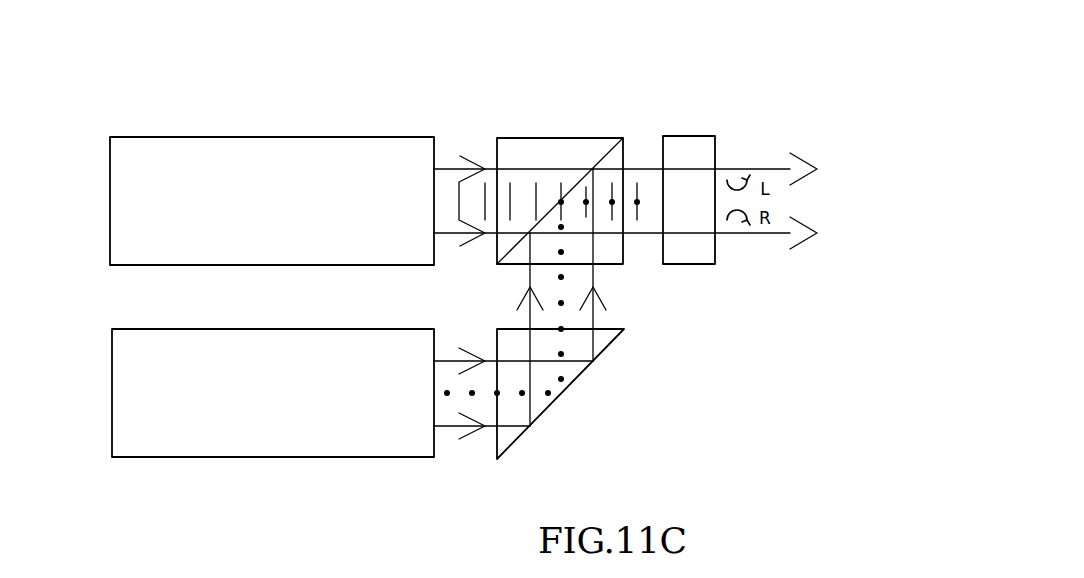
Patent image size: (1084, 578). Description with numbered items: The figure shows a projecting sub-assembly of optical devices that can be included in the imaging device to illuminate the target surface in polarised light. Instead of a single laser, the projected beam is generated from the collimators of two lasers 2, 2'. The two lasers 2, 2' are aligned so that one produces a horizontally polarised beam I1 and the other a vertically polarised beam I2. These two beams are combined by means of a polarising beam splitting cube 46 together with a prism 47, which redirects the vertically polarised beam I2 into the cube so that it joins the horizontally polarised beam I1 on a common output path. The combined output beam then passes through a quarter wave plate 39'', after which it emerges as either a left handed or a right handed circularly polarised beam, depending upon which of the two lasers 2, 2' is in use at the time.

The laser 2 is at (272, 166).
The laser 2' is at (273, 423).
The horizontally polarised beam I1 is at (445, 168).
The vertically polarised beam I2 is at (448, 432).
The polarising beam splitting cube 46 is at (581, 142).
The quarter wave plate 39'' is at (689, 173).
The prism 47 is at (587, 367).